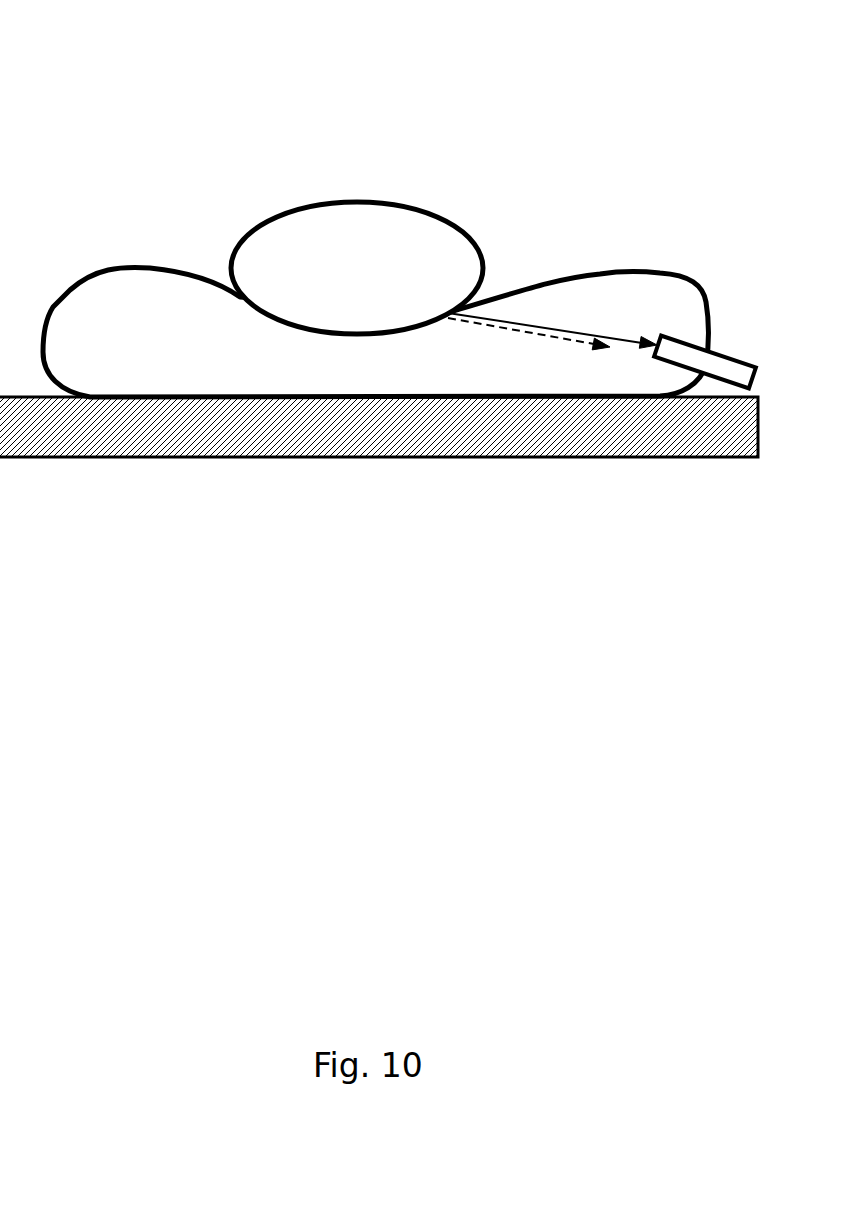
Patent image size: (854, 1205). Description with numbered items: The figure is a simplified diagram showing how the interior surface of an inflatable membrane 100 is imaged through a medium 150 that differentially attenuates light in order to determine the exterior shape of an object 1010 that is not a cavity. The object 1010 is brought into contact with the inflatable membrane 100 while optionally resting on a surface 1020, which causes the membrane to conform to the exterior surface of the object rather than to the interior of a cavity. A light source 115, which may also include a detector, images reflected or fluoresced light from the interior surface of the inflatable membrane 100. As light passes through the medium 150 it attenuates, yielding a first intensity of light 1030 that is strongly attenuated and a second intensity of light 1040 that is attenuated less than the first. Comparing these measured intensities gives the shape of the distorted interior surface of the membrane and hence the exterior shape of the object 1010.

The inflatable membrane 100 is at (152, 268).
The object 1010 is at (362, 202).
The surface 1020 is at (372, 458).
The first intensity of light 1030 is at (540, 337).
The second intensity of light 1040 is at (623, 335).
The light source 115 is at (740, 353).
The medium 150 is at (533, 196).